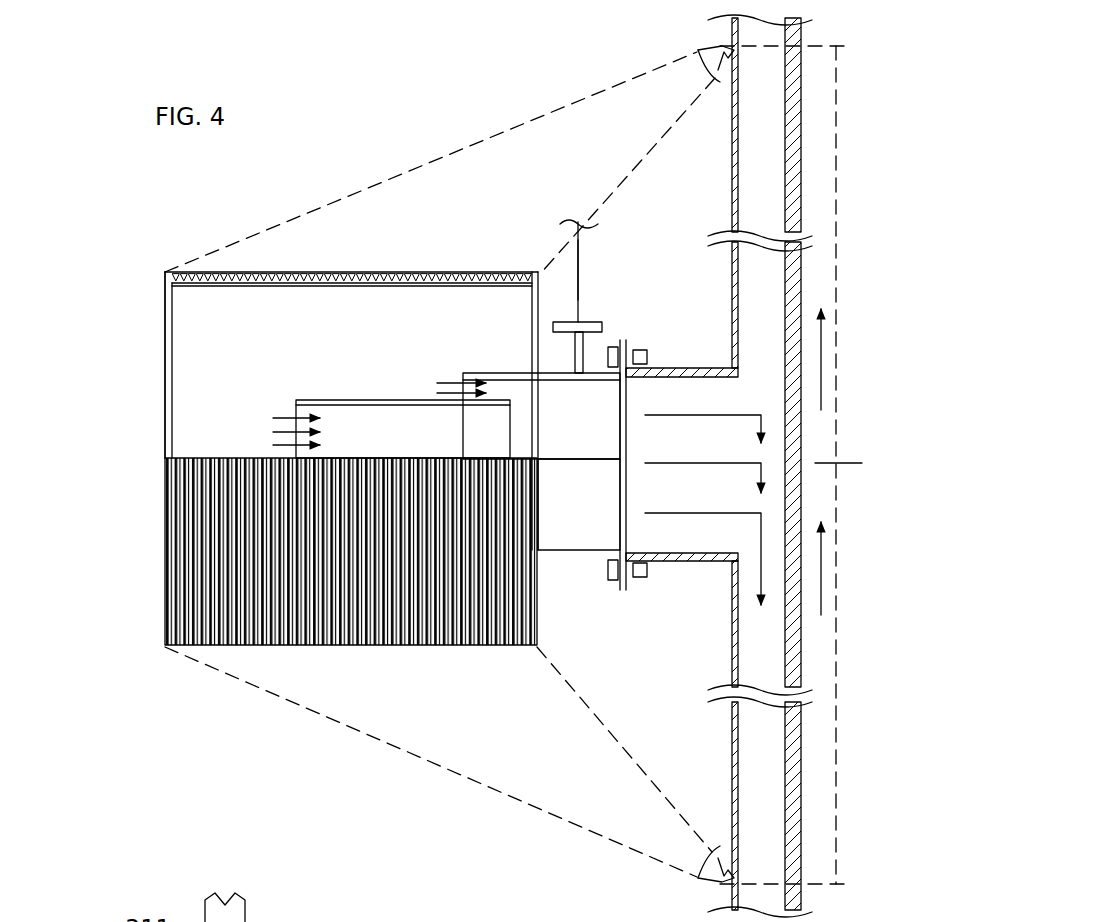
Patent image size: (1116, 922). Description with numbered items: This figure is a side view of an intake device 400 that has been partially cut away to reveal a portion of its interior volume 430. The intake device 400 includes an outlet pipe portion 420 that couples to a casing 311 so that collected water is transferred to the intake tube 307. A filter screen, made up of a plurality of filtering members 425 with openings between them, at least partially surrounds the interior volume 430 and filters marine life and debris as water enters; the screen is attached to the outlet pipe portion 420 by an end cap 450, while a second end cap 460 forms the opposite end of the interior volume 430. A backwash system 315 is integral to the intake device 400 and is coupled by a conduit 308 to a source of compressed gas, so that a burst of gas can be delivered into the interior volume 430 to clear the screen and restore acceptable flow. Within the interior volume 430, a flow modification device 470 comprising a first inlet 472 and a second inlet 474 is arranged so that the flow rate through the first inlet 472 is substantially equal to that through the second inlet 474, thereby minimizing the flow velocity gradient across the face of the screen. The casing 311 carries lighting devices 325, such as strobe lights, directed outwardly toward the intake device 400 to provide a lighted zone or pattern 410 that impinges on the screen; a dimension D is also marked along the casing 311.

The intake device 400 is at (132, 320).
The lighted zone or pattern 410 is at (438, 183).
The filtering members 425 is at (375, 272).
The end cap 450 is at (545, 292).
The conduit 308 is at (582, 258).
The backwash system 315 is at (585, 338).
The intake tube 307 is at (790, 265).
The casing 311 is at (730, 660).
The lighting devices 325 is at (713, 50).
The flow modification device 470 is at (328, 352).
The first inlet 472 is at (490, 372).
The second inlet 474 is at (318, 400).
The end cap 460 is at (165, 385).
The interior volume 430 is at (188, 444).
The outlet pipe portion 420 is at (570, 555).
The duct diameter D is at (840, 80).